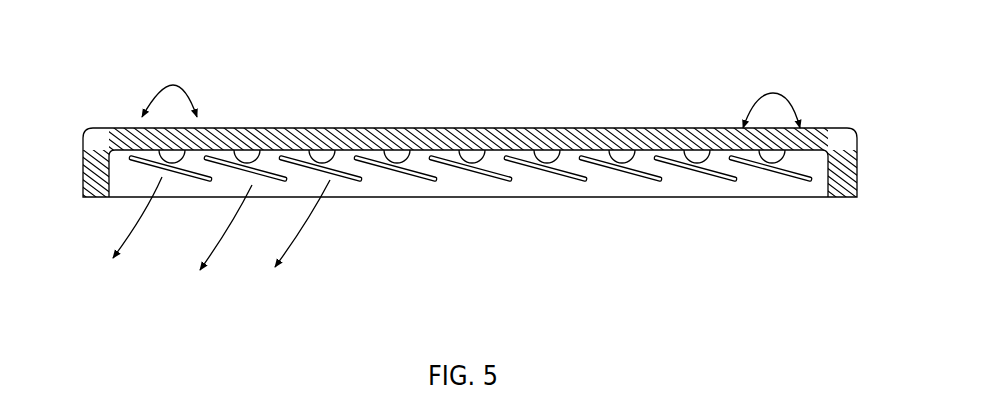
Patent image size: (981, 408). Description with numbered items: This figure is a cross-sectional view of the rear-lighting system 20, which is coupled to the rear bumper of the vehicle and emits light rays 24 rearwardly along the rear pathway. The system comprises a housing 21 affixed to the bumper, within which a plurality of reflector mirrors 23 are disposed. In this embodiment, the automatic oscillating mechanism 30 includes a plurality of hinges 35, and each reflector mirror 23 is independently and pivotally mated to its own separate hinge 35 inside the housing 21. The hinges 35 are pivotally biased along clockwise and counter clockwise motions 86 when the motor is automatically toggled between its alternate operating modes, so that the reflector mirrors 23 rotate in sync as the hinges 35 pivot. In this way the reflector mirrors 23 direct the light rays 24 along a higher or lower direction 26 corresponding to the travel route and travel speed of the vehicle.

The rear-lighting system 20 is at (615, 130).
The housing 21 is at (845, 165).
The reflector mirrors 23 is at (422, 182).
The light rays 24 is at (97, 277).
The direction 26 is at (92, 242).
The automatic oscillating mechanism 30 is at (350, 116).
The hinges 35 is at (547, 150).
The clockwise and counter clockwise motions 86 is at (173, 85).